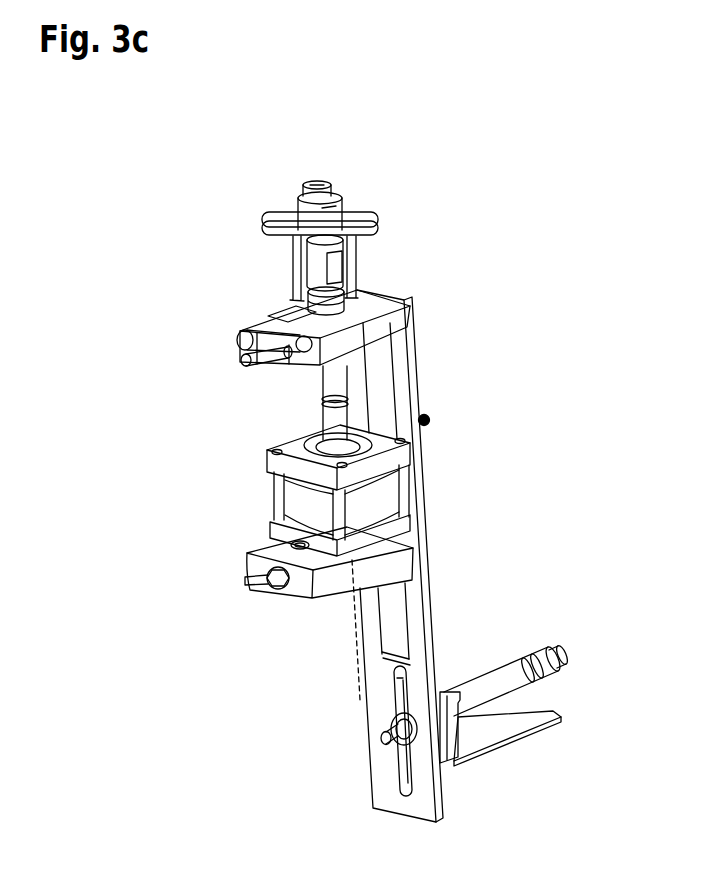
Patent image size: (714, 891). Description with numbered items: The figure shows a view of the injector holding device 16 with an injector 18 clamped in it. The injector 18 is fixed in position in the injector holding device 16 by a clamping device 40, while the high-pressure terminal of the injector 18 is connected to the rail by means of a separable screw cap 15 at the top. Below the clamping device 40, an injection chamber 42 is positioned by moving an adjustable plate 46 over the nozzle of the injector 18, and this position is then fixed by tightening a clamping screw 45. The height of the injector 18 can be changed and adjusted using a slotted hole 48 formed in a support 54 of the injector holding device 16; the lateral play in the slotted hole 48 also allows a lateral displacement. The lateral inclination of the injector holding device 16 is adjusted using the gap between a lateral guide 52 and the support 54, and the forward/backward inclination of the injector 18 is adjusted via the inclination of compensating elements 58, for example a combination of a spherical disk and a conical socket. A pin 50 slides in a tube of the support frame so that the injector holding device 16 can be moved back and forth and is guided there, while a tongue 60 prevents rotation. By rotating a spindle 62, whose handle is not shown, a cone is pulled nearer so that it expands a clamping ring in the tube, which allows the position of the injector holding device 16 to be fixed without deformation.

The separable screw cap 15 is at (374, 193).
The injector holding device 16 is at (462, 297).
The injector 18 is at (267, 403).
The clamping device 40 is at (213, 299).
The injection chamber 42 is at (297, 497).
The clamping screw 45 is at (245, 580).
The adjustable plate 46 is at (328, 590).
The slotted hole 48 is at (403, 797).
The pin 50 is at (490, 682).
The lateral guide 52 is at (448, 748).
The support 54 is at (420, 586).
The compensating elements 58 is at (392, 750).
The tongue 60 is at (518, 720).
The spindle 62 is at (381, 738).